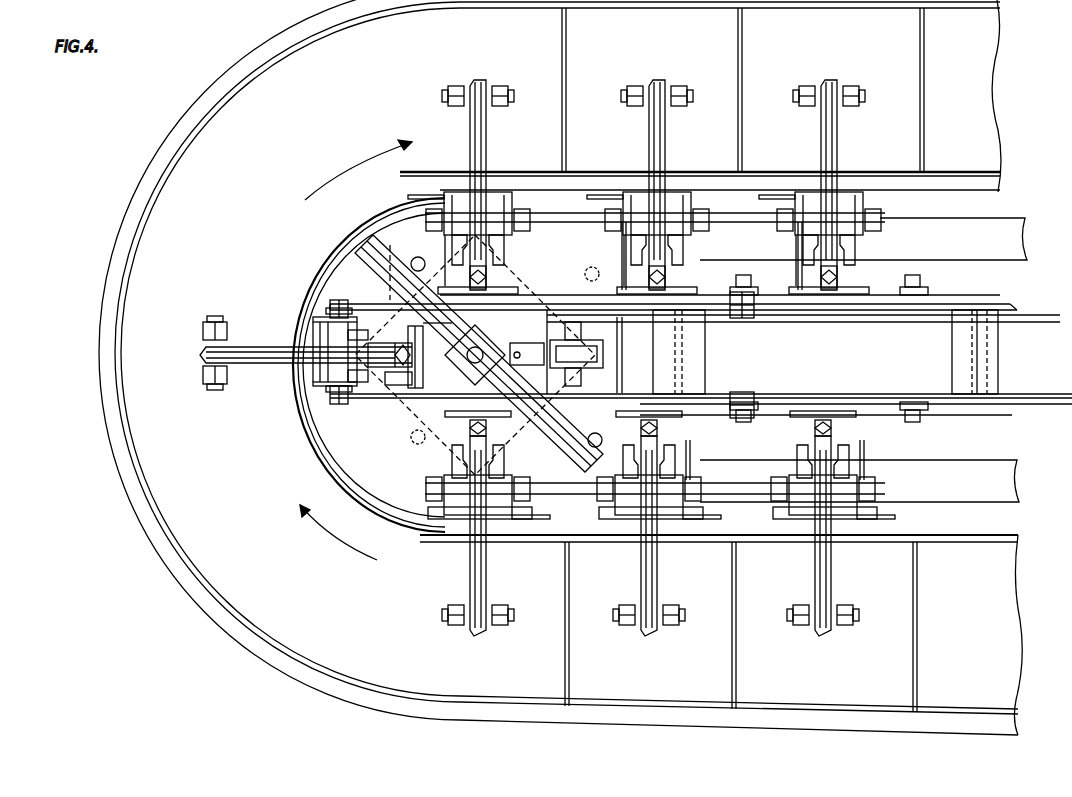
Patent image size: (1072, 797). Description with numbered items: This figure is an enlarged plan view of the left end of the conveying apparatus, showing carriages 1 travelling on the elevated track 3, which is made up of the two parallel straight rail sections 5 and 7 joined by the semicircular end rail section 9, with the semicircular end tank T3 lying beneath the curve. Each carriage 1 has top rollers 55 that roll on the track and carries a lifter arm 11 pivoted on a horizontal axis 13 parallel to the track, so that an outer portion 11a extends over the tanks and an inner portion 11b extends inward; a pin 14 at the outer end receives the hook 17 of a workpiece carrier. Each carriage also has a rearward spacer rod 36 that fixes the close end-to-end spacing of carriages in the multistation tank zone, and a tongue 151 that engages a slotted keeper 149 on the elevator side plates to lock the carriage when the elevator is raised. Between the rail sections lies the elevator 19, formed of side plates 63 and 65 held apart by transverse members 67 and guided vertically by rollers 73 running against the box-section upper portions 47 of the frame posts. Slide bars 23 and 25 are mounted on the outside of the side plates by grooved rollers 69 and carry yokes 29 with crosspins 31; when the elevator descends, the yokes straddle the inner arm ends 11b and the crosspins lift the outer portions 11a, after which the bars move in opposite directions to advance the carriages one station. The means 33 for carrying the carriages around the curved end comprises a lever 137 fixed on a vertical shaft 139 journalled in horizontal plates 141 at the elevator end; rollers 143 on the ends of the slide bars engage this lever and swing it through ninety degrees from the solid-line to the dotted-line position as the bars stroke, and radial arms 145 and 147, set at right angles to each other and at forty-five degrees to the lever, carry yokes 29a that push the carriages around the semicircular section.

The carriage 1 is at (512, 200).
The elevated track 3 is at (995, 215).
The straight rail section 5 is at (980, 478).
The straight rail section 7 is at (972, 220).
The semicircular end rail section 9 is at (405, 228).
The arm 11 is at (470, 126).
The outer portion of arm 11a is at (482, 82).
The inner portion of arm 11b is at (845, 272).
The horizontal pivot axis 13 is at (638, 200).
The pin 14 is at (444, 92).
The hook 17 is at (460, 86).
The elevator 19 is at (1022, 410).
The slide bar 23 is at (980, 416).
The slide bar 25 is at (1000, 303).
The coupler or yoke 29 is at (500, 248).
The yoke 29a is at (388, 326).
The crosspin 31 is at (448, 452).
The carriage moving means 33 is at (378, 226).
The spacer rod 36 is at (420, 196).
The upper post portion 47 is at (604, 352).
The top roller 55 is at (600, 214).
The elevator side plate 63 is at (1028, 394).
The elevator side plate 65 is at (1035, 323).
The transverse member 67 is at (700, 352).
The upper grooved roller 69 is at (734, 292).
The guide roller 73 is at (576, 354).
The lever 137 is at (328, 262).
The vertical shaft 139 is at (500, 330).
The horizontal plate 141 is at (490, 290).
The roller 143 is at (416, 257).
The radial arm 145 is at (440, 418).
The radial arm 147 is at (440, 386).
The slotted keeper 149 is at (798, 286).
The tongue 151 is at (798, 246).
The semicircular tank T3 is at (162, 229).